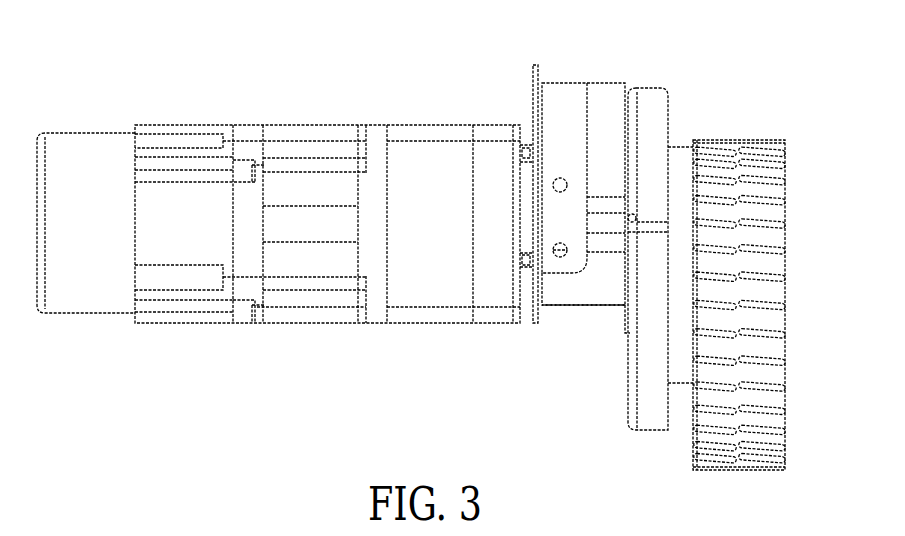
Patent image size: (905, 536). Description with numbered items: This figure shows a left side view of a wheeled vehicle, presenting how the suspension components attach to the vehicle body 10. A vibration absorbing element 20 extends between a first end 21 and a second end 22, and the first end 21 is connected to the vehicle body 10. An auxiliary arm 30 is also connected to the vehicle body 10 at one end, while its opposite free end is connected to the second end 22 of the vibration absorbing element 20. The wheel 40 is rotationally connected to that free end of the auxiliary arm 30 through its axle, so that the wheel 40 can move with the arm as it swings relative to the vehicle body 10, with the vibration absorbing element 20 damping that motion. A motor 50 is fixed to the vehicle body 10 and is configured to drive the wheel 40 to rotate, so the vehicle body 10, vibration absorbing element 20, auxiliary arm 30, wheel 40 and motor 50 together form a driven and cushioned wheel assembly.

The mounting plate 10 is at (530, 105).
The bracket 20 is at (586, 194).
The bracket plate portion 21 is at (562, 93).
The bracket lower portion 22 is at (565, 290).
The disc 30 is at (652, 103).
The gear wheel 40 is at (738, 152).
The motor 50 is at (305, 145).